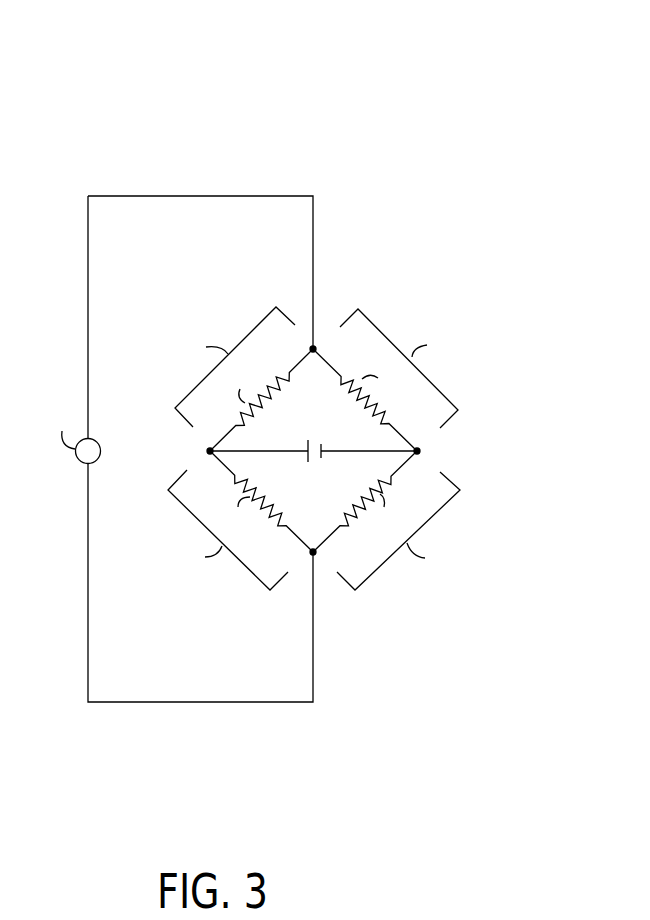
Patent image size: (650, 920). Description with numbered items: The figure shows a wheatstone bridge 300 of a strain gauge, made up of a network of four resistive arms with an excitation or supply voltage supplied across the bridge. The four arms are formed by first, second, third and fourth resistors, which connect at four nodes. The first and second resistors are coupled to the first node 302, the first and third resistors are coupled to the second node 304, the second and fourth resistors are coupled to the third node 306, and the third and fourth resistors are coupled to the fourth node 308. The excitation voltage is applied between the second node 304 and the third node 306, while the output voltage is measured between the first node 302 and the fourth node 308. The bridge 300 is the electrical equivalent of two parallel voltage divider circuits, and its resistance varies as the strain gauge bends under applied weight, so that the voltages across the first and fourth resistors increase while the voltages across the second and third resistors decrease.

The wheatstone bridge 300 is at (285, 60).
The first node 302 is at (315, 347).
The second node 304 is at (208, 450).
The third node 306 is at (419, 451).
The fourth node 308 is at (315, 553).